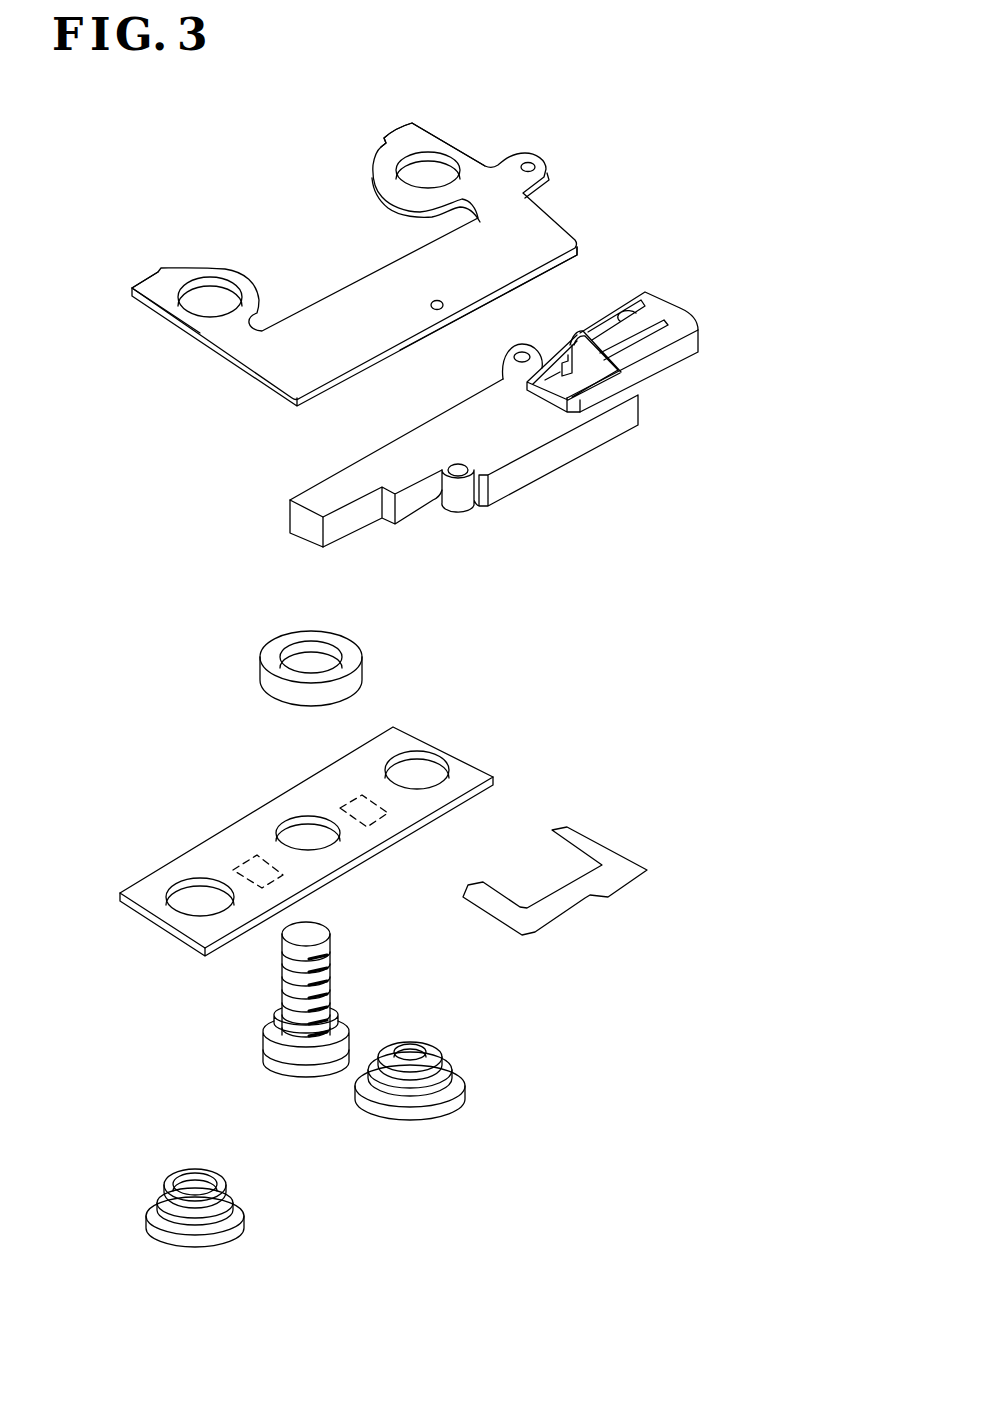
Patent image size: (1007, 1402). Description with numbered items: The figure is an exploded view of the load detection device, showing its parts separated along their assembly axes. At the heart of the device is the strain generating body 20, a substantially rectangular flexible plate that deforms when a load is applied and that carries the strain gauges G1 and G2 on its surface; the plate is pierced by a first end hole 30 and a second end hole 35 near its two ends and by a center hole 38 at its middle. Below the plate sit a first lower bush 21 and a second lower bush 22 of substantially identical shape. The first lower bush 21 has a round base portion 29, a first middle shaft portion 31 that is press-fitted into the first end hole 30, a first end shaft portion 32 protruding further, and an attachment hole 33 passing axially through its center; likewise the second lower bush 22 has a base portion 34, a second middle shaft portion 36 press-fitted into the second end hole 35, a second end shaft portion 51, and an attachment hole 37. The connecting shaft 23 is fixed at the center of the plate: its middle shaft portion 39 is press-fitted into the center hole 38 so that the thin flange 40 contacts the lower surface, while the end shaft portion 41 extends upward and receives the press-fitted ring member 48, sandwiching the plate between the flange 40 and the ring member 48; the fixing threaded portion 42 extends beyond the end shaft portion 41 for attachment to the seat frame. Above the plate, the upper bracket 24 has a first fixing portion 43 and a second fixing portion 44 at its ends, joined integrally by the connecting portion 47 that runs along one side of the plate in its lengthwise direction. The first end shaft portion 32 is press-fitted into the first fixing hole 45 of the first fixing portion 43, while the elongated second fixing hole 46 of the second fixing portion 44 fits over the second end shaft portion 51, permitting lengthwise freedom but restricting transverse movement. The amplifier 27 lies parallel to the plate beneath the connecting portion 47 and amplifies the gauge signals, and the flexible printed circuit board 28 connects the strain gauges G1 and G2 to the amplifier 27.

The strain generating body 20 is at (483, 777).
The first lower bush 21 is at (202, 1253).
The second lower bush 22 is at (445, 1118).
The connecting shaft 23 is at (252, 1053).
The upper bracket 24 is at (562, 220).
The amplifier 27 is at (617, 418).
The flexible printed circuit board 28 is at (608, 855).
The base portion 29 is at (152, 1232).
The first end hole 30 is at (193, 892).
The first middle shaft portion 31 is at (222, 1218).
The first end shaft portion 32 is at (183, 1212).
The attachment hole 33 is at (187, 1180).
The base portion 34 is at (413, 1120).
The second end hole 35 is at (422, 763).
The second middle shaft portion 36 is at (397, 1092).
The attachment hole 37 is at (410, 1048).
The center hole 38 is at (320, 843).
The middle shaft portion 39 is at (287, 1052).
The flange 40 is at (312, 1075).
The end shaft portion 41 is at (277, 1020).
The fixing threaded portion 42 is at (287, 972).
The first fixing portion 43 is at (163, 288).
The second fixing portion 44 is at (415, 132).
The first fixing hole 45 is at (203, 293).
The second fixing hole 46 is at (433, 167).
The connecting portion 47 is at (549, 266).
The ring member 48 is at (280, 643).
The second end shaft portion 51 is at (428, 1077).
The strain gauge G1 is at (243, 862).
The strain gauge G2 is at (350, 803).